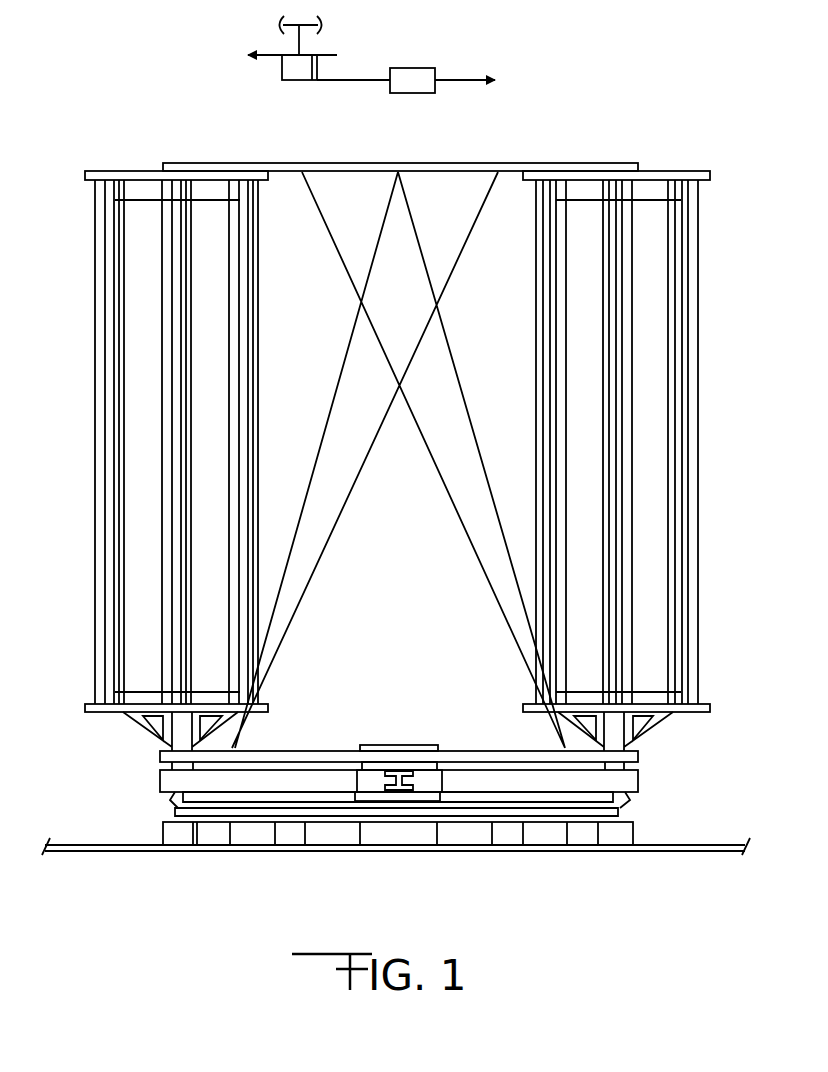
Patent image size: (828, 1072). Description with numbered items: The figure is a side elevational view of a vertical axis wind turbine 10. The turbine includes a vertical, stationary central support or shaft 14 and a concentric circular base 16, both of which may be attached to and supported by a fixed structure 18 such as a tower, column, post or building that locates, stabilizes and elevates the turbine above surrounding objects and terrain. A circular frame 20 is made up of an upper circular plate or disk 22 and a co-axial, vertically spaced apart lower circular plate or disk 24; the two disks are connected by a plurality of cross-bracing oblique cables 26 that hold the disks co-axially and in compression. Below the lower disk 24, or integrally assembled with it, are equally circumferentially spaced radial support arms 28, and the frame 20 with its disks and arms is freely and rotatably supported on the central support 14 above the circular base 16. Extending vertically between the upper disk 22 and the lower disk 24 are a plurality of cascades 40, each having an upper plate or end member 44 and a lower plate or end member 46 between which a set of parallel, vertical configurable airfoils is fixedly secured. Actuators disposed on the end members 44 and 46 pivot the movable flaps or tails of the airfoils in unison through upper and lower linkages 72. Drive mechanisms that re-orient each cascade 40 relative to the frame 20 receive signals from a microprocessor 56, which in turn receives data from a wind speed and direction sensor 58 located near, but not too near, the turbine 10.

The vertical axis wind turbine 10 is at (565, 92).
The central support or shaft 14 is at (398, 830).
The circular base 16 is at (668, 797).
The fixed structure 18 is at (648, 832).
The circular frame 20 is at (148, 133).
The upper circular plate or disk 22 is at (365, 168).
The lower circular plate or disk 24 is at (293, 748).
The cross-bracing oblique cables 26 is at (417, 348).
The radial support arms 28 is at (399, 762).
The cascades 40 is at (74, 380).
The upper plate, base or end member 44 is at (92, 172).
The lower plate, base or end member 46 is at (90, 712).
The microprocessor 56 is at (408, 80).
The wind speed and direction sensor 58 is at (297, 65).
The upper and lower linkages 72 is at (142, 203).